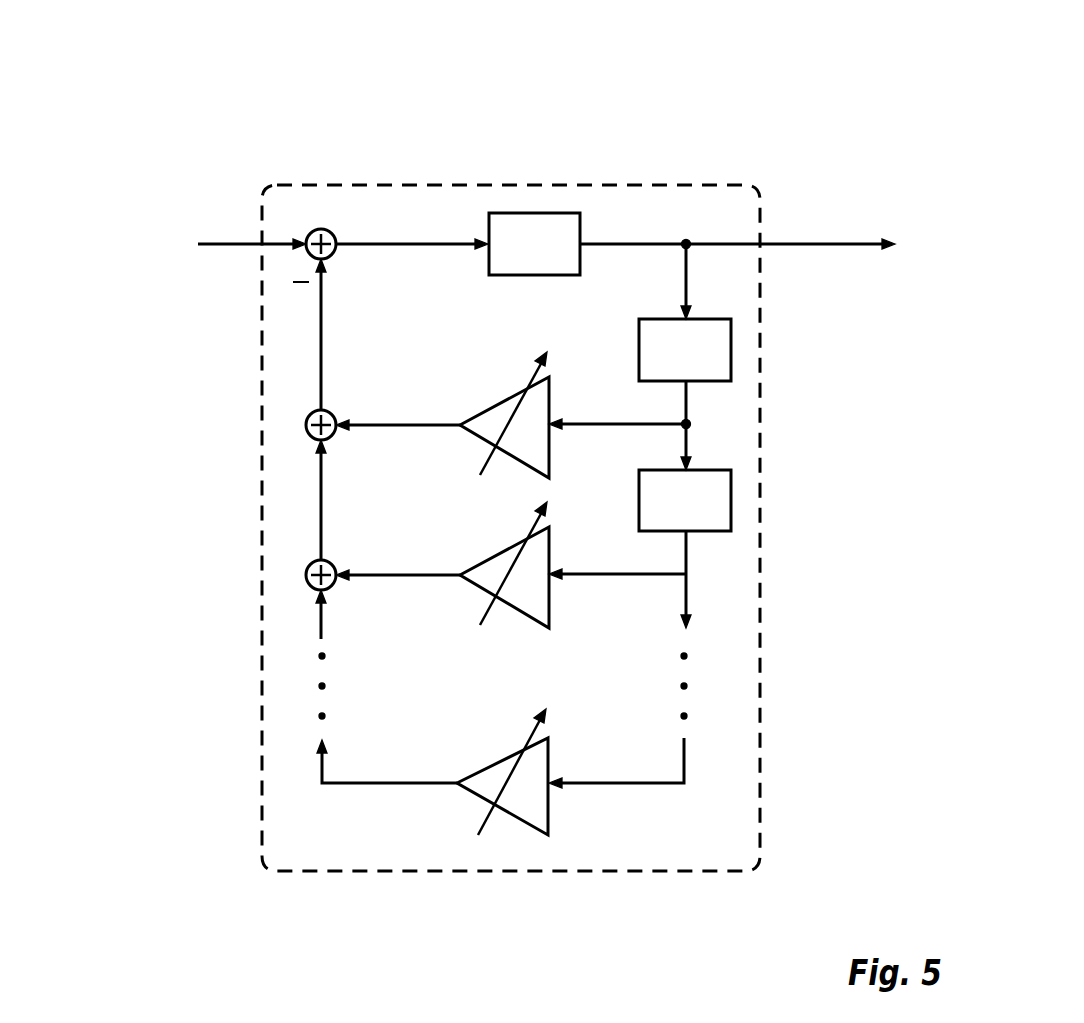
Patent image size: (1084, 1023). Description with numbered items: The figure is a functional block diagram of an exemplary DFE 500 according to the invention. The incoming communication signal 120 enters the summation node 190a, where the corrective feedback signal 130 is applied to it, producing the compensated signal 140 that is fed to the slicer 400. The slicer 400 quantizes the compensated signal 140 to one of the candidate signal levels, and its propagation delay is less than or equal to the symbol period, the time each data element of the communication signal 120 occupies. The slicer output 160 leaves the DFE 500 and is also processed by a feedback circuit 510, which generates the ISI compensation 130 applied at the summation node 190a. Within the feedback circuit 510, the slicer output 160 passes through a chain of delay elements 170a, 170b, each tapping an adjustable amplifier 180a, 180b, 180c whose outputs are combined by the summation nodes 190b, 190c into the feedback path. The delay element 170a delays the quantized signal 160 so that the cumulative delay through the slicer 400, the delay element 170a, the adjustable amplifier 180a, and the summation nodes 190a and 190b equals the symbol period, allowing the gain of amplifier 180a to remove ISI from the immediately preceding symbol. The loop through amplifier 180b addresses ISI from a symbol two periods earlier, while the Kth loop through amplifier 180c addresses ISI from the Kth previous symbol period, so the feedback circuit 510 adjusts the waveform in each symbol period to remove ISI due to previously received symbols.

The communicated signal v_rx 120 is at (198, 213).
The corrective signal v_fb 130 is at (290, 340).
The compensated signal v_comp 140 is at (403, 213).
The quantized signal 160 is at (617, 217).
The delay element 170a is at (732, 330).
The delay element 170b is at (732, 480).
The adjustable amplifier 180a is at (515, 395).
The amplifier 180b is at (515, 545).
The amplifier 180c is at (512, 750).
The summation node 190a is at (308, 232).
The summation node 190b is at (314, 442).
The summation node 190c is at (314, 592).
The slicer 400 is at (533, 213).
The DFE 500 is at (752, 185).
The feedback circuit 510 is at (538, 306).